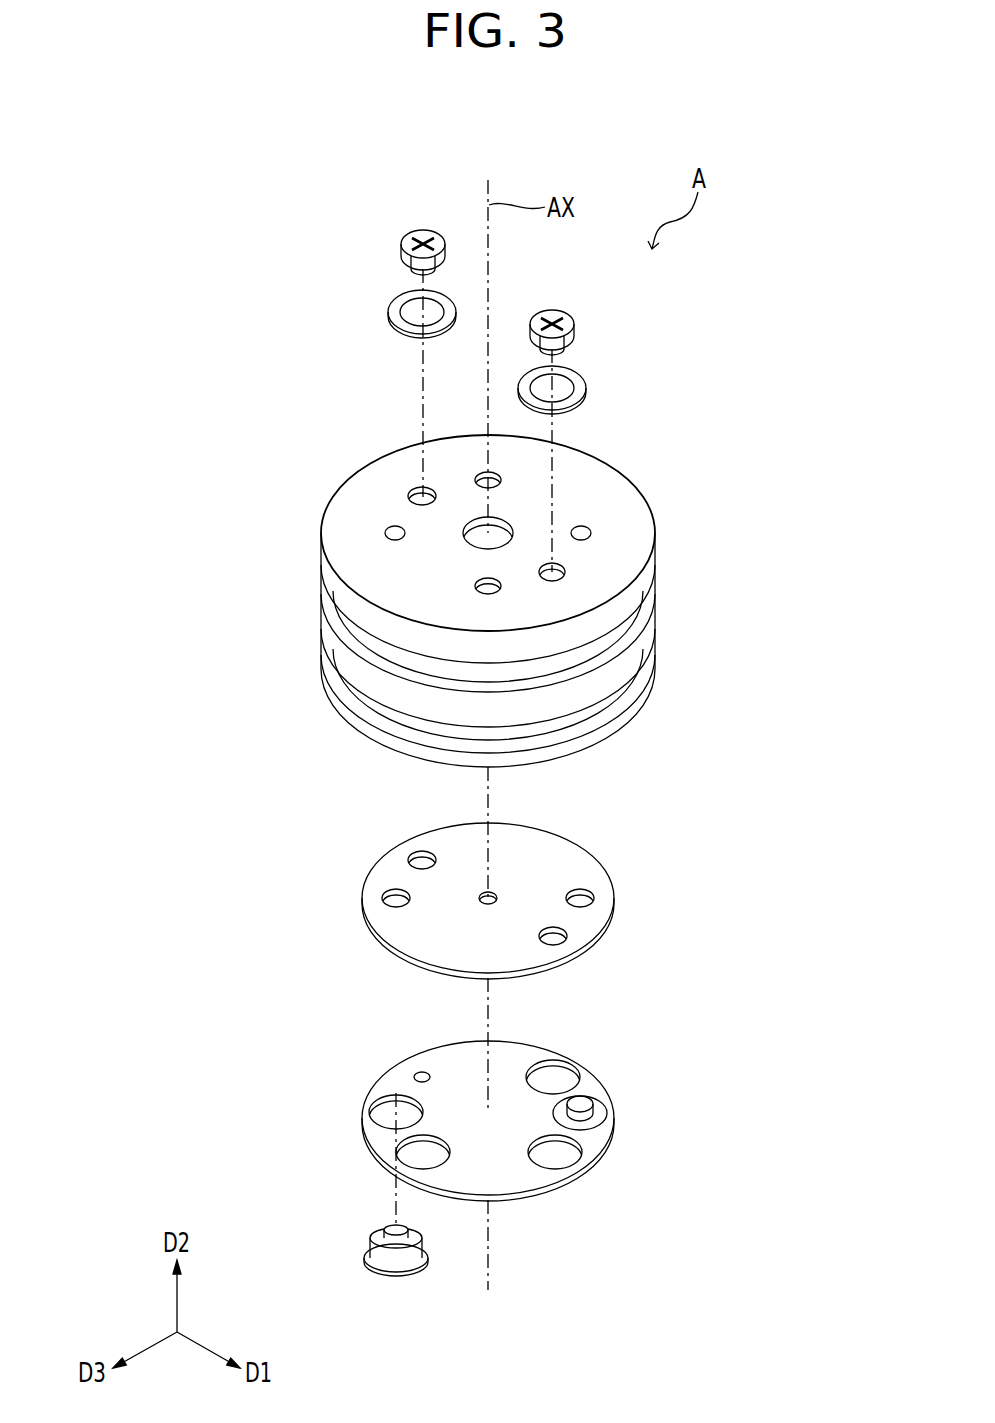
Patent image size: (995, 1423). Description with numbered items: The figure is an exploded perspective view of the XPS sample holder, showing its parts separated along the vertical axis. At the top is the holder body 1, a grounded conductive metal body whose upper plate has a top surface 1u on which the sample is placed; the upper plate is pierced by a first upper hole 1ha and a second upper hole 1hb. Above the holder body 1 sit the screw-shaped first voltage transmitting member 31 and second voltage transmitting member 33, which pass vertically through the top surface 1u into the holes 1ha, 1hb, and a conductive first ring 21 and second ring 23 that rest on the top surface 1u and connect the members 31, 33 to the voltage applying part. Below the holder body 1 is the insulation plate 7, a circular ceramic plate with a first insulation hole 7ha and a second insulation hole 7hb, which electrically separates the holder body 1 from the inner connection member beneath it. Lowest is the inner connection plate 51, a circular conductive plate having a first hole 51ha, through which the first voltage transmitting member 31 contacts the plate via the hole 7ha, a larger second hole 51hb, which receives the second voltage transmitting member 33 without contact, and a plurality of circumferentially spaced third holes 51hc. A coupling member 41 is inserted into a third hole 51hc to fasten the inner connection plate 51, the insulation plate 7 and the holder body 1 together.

The holder body 1 is at (533, 576).
The top surface 1u is at (627, 505).
The first upper hole 1ha is at (419, 497).
The second upper hole 1hb is at (556, 572).
The insulation plate 7 is at (492, 894).
The first insulation hole 7ha is at (421, 858).
The second insulation hole 7hb is at (558, 938).
The inner connection plate 51 is at (479, 1123).
The first hole 51ha is at (420, 1072).
The second hole 51hb is at (553, 1158).
The third hole 51hc is at (384, 1122).
The first ring 21 is at (389, 312).
The second ring 23 is at (586, 388).
The first voltage transmitting member 31 is at (401, 249).
The second voltage transmitting member 33 is at (574, 326).
The coupling member 41 is at (375, 1253).